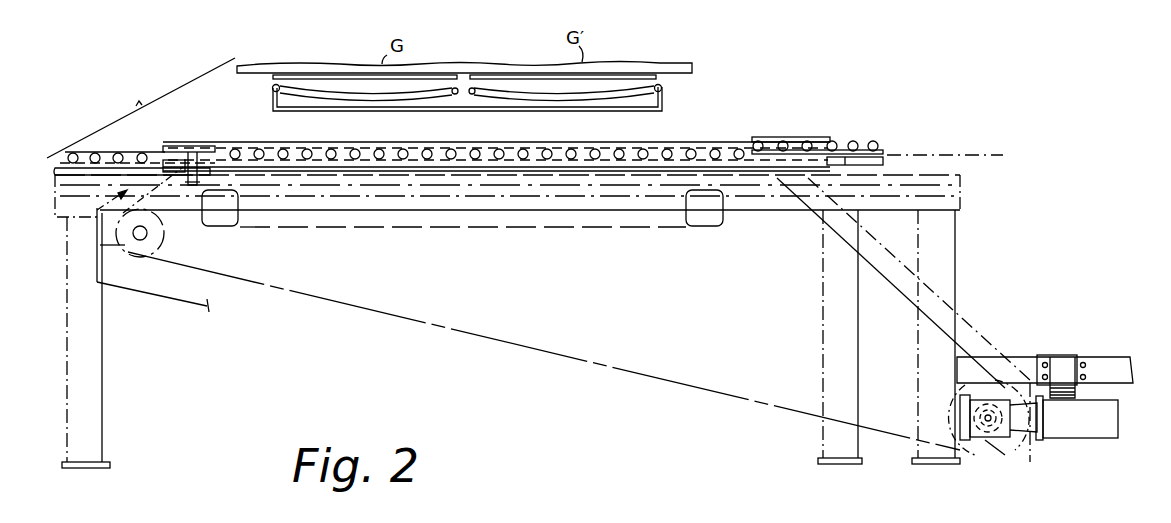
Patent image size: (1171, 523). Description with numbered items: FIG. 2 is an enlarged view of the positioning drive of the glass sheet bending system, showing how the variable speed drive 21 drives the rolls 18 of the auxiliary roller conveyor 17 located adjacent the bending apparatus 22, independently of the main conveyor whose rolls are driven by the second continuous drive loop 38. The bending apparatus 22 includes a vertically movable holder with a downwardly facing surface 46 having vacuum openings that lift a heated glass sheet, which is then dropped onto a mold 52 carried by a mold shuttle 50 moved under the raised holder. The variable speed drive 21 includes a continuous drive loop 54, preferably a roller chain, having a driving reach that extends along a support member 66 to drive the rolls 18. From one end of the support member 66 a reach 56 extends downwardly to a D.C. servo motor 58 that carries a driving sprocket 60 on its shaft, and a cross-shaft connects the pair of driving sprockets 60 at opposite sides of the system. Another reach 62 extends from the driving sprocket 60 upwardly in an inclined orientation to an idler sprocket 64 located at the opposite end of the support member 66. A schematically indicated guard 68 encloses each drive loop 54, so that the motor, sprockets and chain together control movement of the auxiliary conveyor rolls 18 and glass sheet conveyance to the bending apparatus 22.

The auxiliary roller conveyor 17 is at (212, 146).
The rolls 18 is at (138, 155).
The variable speed drive 21 is at (642, 390).
The bending apparatus 22 is at (680, 58).
The second continuous drive loop 38 is at (955, 152).
The downwardly facing surface 46 is at (690, 76).
The mold shuttle 50 is at (275, 108).
The mold 52 is at (272, 88).
The continuous drive loop 54 is at (527, 352).
The reach 56 is at (906, 288).
The D.C. servo motor 58 is at (1085, 435).
The driving sprocket 60 is at (992, 447).
The reach 62 is at (440, 322).
The idler sprocket 64 is at (163, 246).
The support member 66 is at (340, 195).
The guard 68 is at (160, 296).